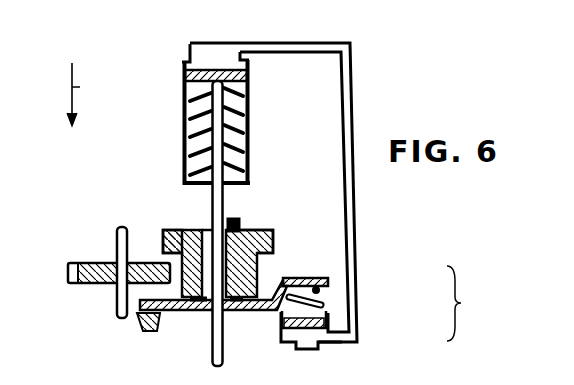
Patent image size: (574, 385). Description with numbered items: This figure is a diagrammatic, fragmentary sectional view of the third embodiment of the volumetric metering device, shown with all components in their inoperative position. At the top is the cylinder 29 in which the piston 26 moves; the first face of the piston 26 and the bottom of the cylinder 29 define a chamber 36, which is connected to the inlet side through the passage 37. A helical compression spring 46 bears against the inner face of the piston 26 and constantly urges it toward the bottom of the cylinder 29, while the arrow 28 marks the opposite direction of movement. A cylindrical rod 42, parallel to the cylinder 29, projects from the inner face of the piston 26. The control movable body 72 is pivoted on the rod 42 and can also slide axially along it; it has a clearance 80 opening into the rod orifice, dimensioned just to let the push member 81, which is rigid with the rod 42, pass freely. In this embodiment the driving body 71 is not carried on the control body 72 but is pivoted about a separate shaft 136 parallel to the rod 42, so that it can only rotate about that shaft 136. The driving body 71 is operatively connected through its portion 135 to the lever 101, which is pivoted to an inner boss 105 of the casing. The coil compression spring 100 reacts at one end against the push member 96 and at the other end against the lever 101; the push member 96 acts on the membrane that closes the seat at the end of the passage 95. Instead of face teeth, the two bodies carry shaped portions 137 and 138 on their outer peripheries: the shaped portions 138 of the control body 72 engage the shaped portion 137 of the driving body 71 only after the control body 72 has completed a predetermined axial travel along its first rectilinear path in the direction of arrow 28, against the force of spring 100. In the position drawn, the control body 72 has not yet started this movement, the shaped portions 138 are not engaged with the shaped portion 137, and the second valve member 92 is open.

The piston 26 is at (203, 70).
The chamber 36 is at (220, 56).
The arrow 28 is at (88, 94).
The helical compression spring 46 is at (183, 128).
The cylinder 29 is at (251, 131).
The shaped portions 138 is at (163, 229).
The shaft 136 is at (119, 256).
The shaped portion 137 is at (70, 271).
The driving body 71 is at (97, 285).
The inner boss 105 is at (151, 332).
The portion 135 is at (234, 312).
The rod 42 is at (218, 204).
The push member 81 is at (240, 222).
The clearance 80 is at (264, 240).
The control body 72 is at (247, 272).
The passage 37 is at (354, 236).
The lever 101 is at (328, 277).
The coil compression spring 100 is at (321, 291).
The push member 96 is at (328, 322).
The passage 95 is at (340, 349).
The second valve member 92 is at (469, 303).